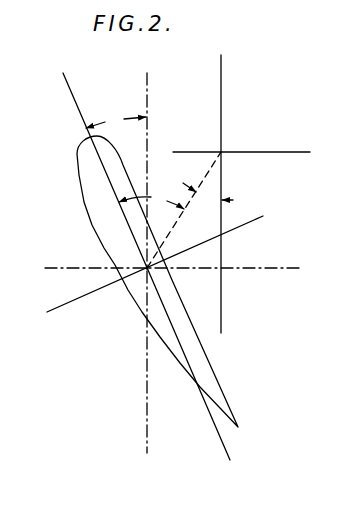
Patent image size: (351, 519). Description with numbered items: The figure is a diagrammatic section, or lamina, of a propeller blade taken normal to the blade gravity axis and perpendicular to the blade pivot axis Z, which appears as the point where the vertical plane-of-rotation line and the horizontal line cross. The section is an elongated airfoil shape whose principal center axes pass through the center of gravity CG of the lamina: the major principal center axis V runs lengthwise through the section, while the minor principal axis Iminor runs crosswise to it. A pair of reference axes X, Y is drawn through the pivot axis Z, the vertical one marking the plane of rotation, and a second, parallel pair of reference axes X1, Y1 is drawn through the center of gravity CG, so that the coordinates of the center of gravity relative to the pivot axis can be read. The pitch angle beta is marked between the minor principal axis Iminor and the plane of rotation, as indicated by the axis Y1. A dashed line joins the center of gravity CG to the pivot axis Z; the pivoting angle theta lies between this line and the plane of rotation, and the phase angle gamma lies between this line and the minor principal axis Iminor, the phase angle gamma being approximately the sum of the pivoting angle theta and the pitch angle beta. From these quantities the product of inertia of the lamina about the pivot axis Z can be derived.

The Y1 axis (minor-axis-aligned reference through C.G.) Y1 is at (150, 255).
The X1 axis (horizontal reference through C.G.) X1 is at (163, 267).
The Y axis / plane of rotation Y is at (224, 185).
The X axis X is at (236, 152).
The blade pivot axis Z is at (192, 210).
The principal center axis V is at (148, 285).
The minor principal axis of blade section Iminor is at (146, 264).
The center of gravity of the lamina CG is at (147, 268).
The pitch angle beta is at (116, 121).
The phase angle gamma is at (151, 202).
The pivoting angle theta is at (208, 195).